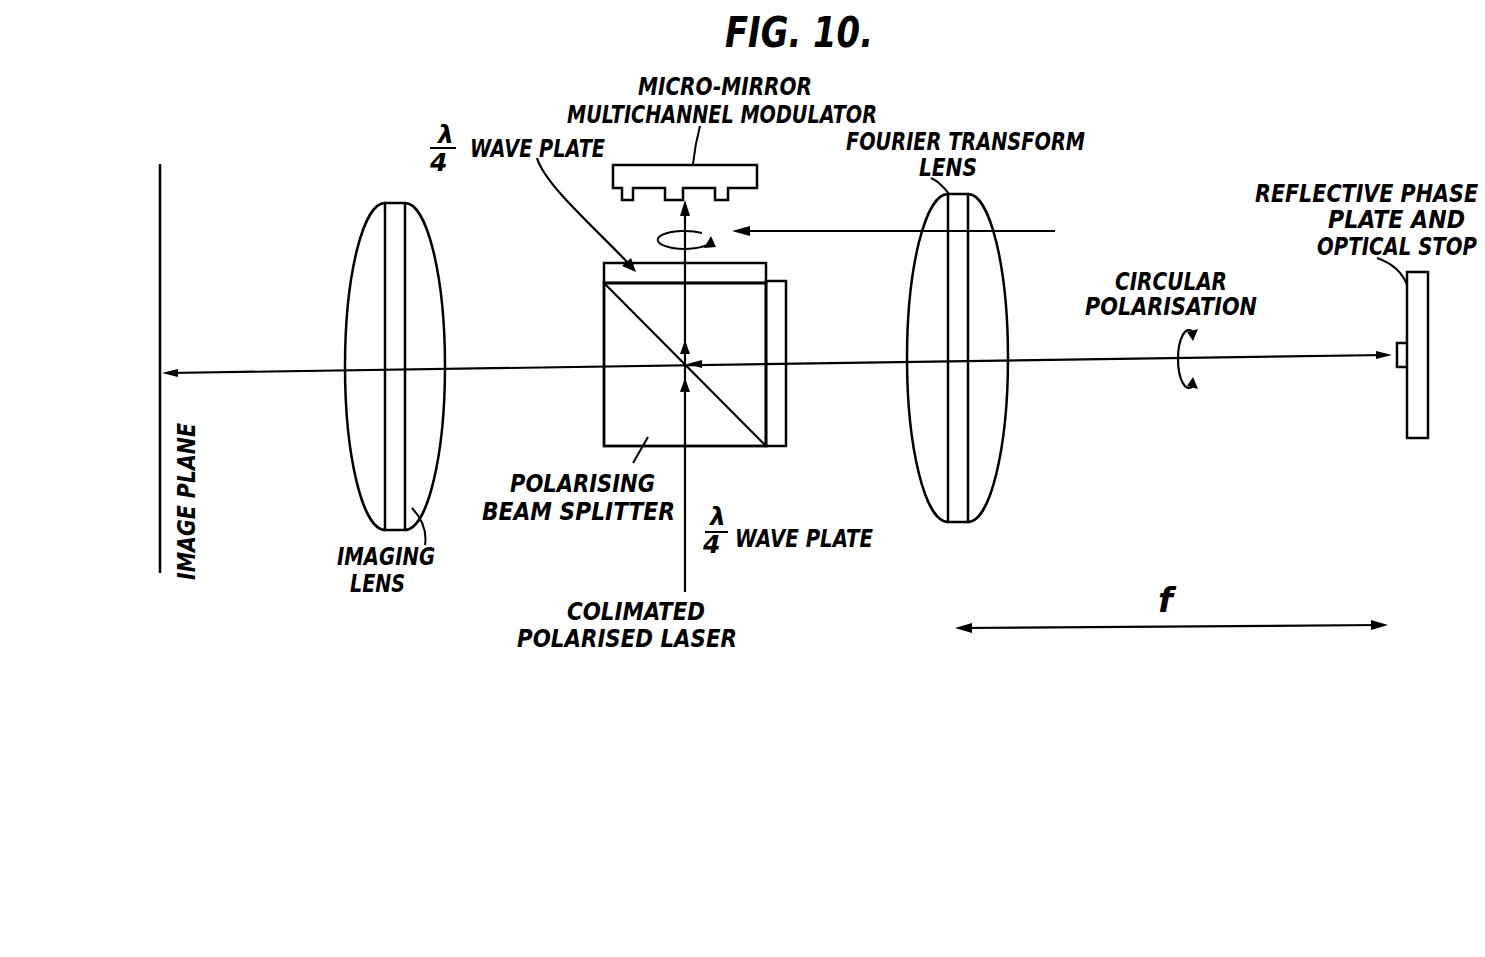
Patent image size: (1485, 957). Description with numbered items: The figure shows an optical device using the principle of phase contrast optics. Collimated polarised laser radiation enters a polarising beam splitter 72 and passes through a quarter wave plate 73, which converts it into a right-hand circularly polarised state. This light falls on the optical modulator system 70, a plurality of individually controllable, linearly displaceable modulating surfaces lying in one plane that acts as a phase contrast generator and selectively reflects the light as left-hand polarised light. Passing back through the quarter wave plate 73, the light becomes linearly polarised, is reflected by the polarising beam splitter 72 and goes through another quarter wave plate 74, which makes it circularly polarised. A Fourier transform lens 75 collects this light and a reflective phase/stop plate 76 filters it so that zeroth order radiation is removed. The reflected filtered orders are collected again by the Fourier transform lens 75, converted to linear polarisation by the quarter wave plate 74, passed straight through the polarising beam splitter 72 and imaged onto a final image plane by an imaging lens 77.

The optical modulator system 70 is at (758, 173).
The polarising beam splitter 72 is at (614, 416).
The ¼ wave plate 73 is at (612, 269).
The ¼ wave plate 74 is at (780, 428).
The Fourier transform lens 75 is at (958, 518).
The reflective phase/stop plate 76 is at (1405, 418).
The imaging lens 77 is at (376, 516).